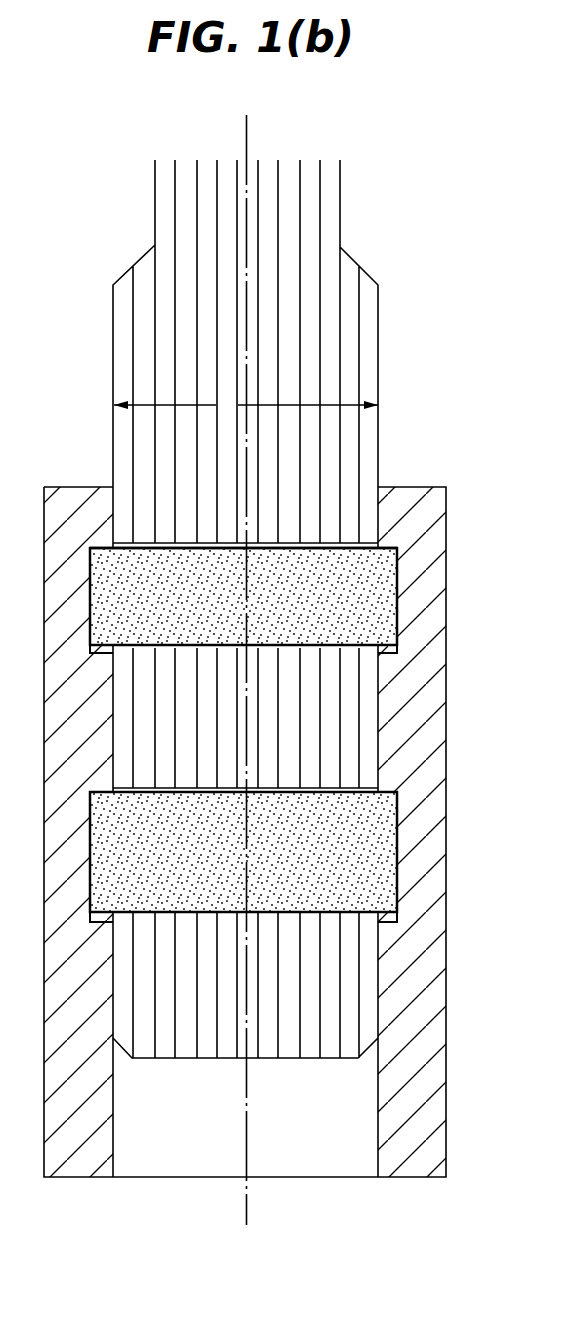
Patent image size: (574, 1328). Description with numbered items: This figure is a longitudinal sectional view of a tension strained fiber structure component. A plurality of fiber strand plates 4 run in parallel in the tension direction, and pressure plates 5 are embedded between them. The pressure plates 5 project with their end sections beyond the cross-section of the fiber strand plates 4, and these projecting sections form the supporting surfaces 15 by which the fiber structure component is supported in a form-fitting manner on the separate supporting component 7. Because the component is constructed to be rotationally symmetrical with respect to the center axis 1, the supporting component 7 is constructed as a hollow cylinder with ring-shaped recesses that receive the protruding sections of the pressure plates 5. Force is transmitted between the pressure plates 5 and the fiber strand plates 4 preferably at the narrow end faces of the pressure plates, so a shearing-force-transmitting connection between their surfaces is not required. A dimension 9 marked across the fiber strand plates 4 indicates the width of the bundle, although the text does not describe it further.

The center axis 1 is at (248, 140).
The fiber strand plates 4 is at (122, 743).
The pressure plates 5 is at (103, 612).
The supporting component 7 is at (55, 877).
The fiber bundle diameter 9 is at (246, 405).
The supporting surfaces 15 is at (90, 563).